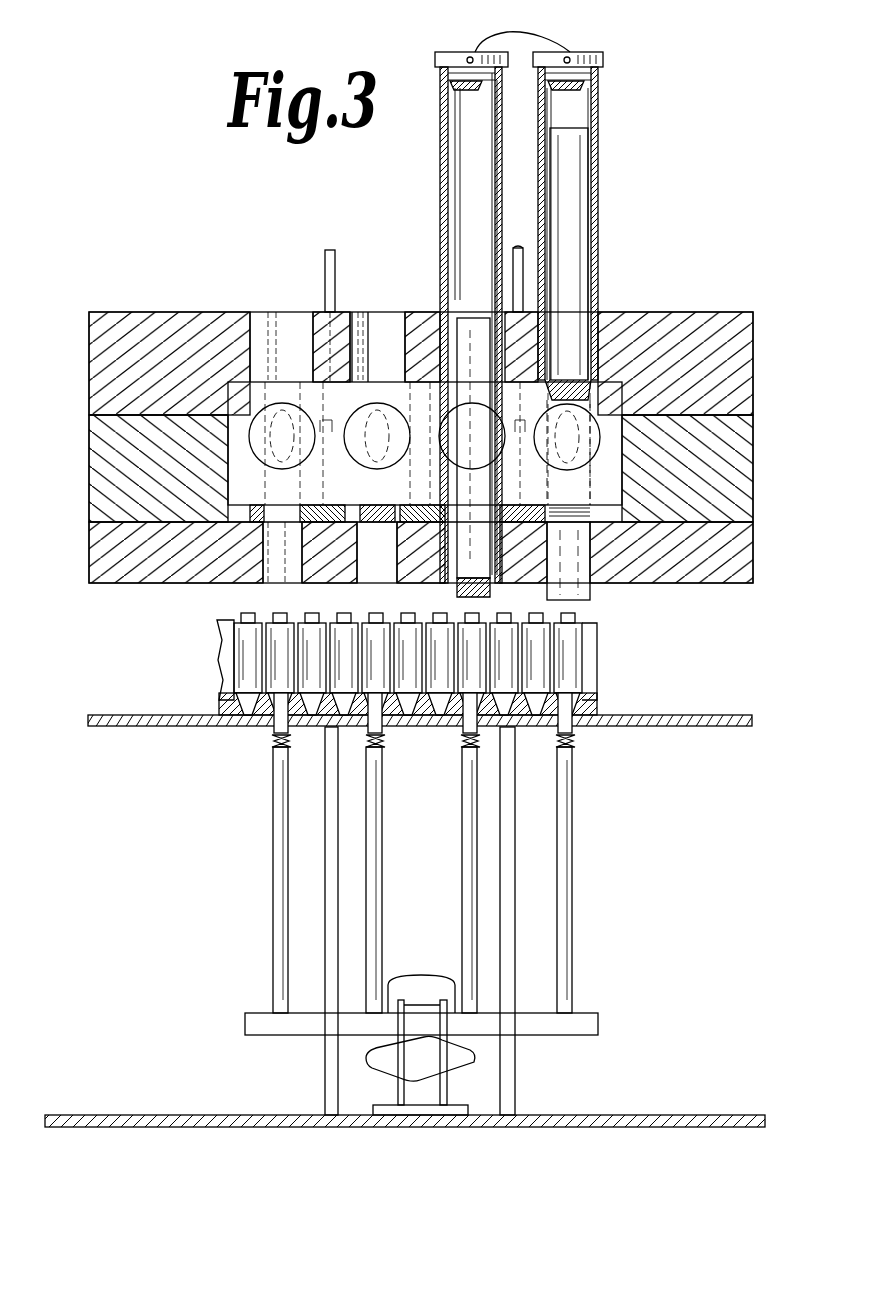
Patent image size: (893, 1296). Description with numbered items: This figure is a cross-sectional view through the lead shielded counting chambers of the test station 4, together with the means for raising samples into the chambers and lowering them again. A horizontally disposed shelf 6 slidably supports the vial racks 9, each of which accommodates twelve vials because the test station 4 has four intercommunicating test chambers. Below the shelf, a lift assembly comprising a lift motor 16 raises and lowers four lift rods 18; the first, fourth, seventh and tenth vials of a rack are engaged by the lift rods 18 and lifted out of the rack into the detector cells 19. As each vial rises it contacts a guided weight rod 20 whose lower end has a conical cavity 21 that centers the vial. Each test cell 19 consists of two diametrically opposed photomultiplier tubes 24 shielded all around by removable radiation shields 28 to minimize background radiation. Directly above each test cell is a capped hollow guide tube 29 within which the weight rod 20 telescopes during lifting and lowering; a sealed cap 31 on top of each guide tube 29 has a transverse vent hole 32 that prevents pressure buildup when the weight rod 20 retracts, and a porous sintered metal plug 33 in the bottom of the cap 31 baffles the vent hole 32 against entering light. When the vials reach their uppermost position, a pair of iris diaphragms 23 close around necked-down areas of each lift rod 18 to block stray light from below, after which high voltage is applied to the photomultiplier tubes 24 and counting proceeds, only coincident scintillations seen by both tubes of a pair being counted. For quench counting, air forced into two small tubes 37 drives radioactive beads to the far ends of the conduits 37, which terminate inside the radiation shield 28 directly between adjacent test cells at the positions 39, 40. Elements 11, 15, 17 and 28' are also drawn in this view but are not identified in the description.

The test station 4 is at (194, 682).
The shelf 6 is at (700, 693).
The racks 9 is at (598, 706).
The valve cartridges 11 is at (312, 598).
The bolt 15 is at (580, 576).
The lift motor 16 is at (432, 1066).
The lower plate 17 is at (598, 1022).
The lift rods 18 is at (275, 872).
The detector cells 19 is at (262, 466).
The weight rod 20 is at (578, 242).
The conical cavity 21 is at (492, 600).
The iris diaphragms 23 is at (590, 522).
The photomultiplier tubes 24 is at (272, 748).
The radiation shields 28 is at (428, 434).
The housing block upper part 28' is at (389, 297).
The guide tube 29 is at (440, 166).
The sealed cap 31 is at (437, 52).
The vent hole 32 is at (522, 30).
The porous sintered metal plug 33 is at (455, 85).
The small tubes 37 is at (325, 258).
The external source position 39 is at (556, 449).
The external source position 40 is at (425, 443).